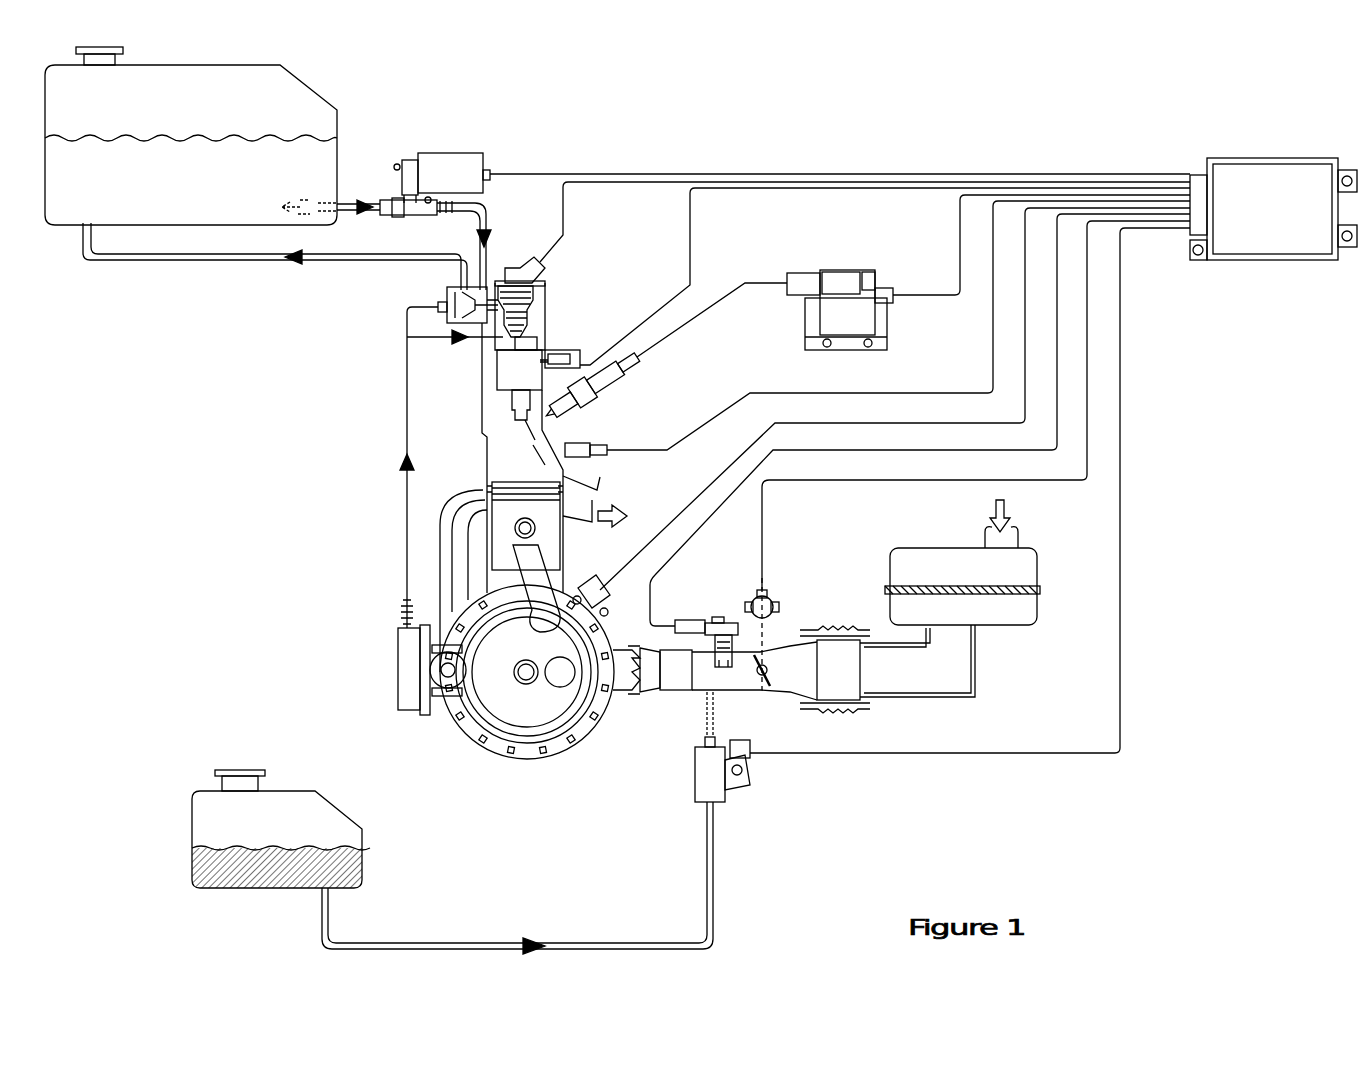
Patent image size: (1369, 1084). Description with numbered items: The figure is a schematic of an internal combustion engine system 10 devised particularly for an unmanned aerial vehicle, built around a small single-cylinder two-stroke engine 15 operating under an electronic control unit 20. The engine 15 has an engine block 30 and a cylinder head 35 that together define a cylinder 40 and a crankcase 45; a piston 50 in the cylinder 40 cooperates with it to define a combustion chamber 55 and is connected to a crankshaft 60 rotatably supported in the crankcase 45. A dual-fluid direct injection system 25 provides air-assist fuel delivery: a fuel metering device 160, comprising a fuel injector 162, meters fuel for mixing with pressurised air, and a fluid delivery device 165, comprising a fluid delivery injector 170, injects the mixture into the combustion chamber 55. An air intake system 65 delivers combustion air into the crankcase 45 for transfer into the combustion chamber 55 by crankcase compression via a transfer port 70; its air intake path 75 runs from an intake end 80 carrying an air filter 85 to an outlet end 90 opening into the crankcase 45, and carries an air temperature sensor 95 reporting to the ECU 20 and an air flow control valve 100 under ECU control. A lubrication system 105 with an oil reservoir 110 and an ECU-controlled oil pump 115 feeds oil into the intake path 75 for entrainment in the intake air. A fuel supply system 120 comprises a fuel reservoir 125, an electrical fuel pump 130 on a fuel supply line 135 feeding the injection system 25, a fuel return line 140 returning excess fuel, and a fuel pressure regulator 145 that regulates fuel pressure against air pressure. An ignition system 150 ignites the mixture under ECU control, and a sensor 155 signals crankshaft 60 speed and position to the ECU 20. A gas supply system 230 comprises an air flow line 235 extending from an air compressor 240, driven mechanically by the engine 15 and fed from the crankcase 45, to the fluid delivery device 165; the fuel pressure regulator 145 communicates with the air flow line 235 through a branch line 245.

The internal combustion engine system 10 is at (224, 439).
The two-stroke engine 15 is at (574, 770).
The electronic control unit 20 is at (1277, 238).
The dual-fluid direct injection system 25 is at (548, 270).
The engine block 30 is at (575, 555).
The cylinder head 35 is at (612, 435).
The cylinder 40 is at (515, 452).
The crankcase 45 is at (435, 712).
The piston 50 is at (480, 490).
The combustion chamber 55 is at (600, 462).
The crankshaft 60 is at (522, 685).
The air intake system 65 is at (990, 685).
The transfer port 70 is at (455, 580).
The air intake path 75 is at (838, 660).
The intake end 80 is at (1020, 540).
The air filter 85 is at (1040, 620).
The outlet end 90 is at (615, 705).
The air temperature sensor 95 is at (722, 620).
The air flow control valve 100 is at (765, 675).
The lubrication system 105 is at (715, 905).
The oil reservoir 110 is at (215, 820).
The oil pump 115 is at (735, 790).
The fuel supply system 120 is at (372, 182).
The fuel reservoir 125 is at (135, 200).
The electrical fuel pump 130 is at (460, 150).
The fuel supply line 135 is at (432, 243).
The fuel return line 140 is at (237, 265).
The fuel pressure regulator 145 is at (440, 300).
The ignition system 150 is at (655, 372).
The sensor 155 is at (606, 601).
The fuel metering device 160 is at (565, 292).
The fuel injector 162 is at (560, 316).
The fluid delivery device 165 is at (505, 380).
The fluid delivery injector 170 is at (520, 413).
The gas supply system 230 is at (407, 533).
The air flow line 235 is at (407, 500).
The air compressor 240 is at (400, 668).
The branch line 245 is at (400, 337).